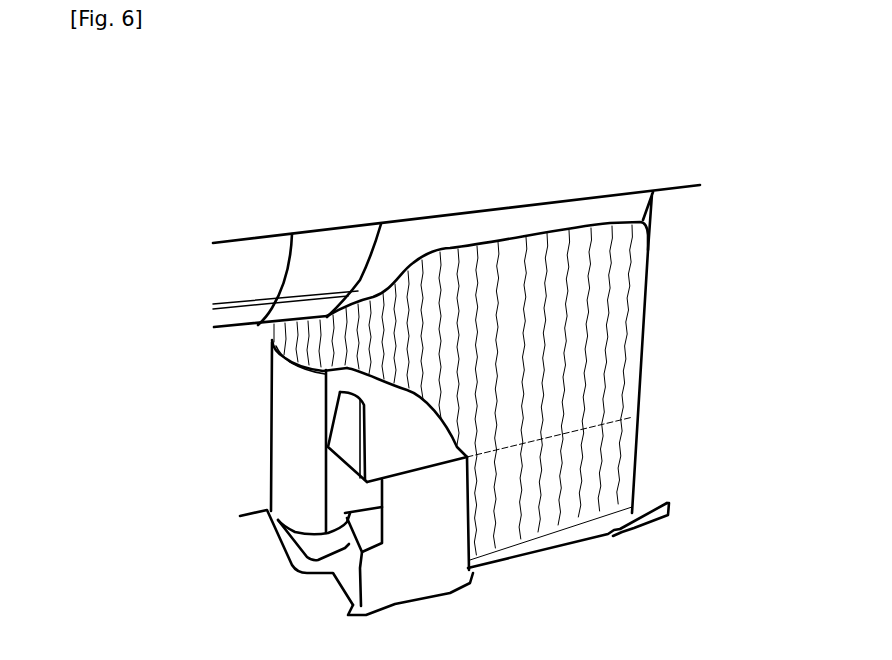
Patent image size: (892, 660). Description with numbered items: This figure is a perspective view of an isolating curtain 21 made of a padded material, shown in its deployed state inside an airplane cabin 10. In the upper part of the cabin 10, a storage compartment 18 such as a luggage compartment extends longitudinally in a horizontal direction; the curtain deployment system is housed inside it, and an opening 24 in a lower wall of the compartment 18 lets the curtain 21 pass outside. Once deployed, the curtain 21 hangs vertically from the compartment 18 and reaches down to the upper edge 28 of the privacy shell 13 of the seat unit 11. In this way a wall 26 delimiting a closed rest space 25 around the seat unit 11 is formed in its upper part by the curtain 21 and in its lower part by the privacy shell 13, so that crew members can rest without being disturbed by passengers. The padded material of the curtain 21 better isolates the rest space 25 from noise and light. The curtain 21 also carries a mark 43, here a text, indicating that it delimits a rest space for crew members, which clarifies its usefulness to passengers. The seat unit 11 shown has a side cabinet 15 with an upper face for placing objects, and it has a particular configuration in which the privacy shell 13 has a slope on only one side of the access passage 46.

The airplane cabin 10 is at (213, 169).
The seat unit 11 is at (242, 378).
The privacy shell 13 is at (287, 423).
The side cabinet 15 is at (413, 560).
The storage compartment 18 is at (325, 255).
The isolating curtain 21 is at (575, 290).
The opening 24 is at (507, 238).
The closed rest space 25 is at (538, 261).
The wall 26 is at (428, 258).
The upper edge 28 is at (455, 420).
The mark 43 is at (537, 400).
The access passage 46 is at (560, 580).